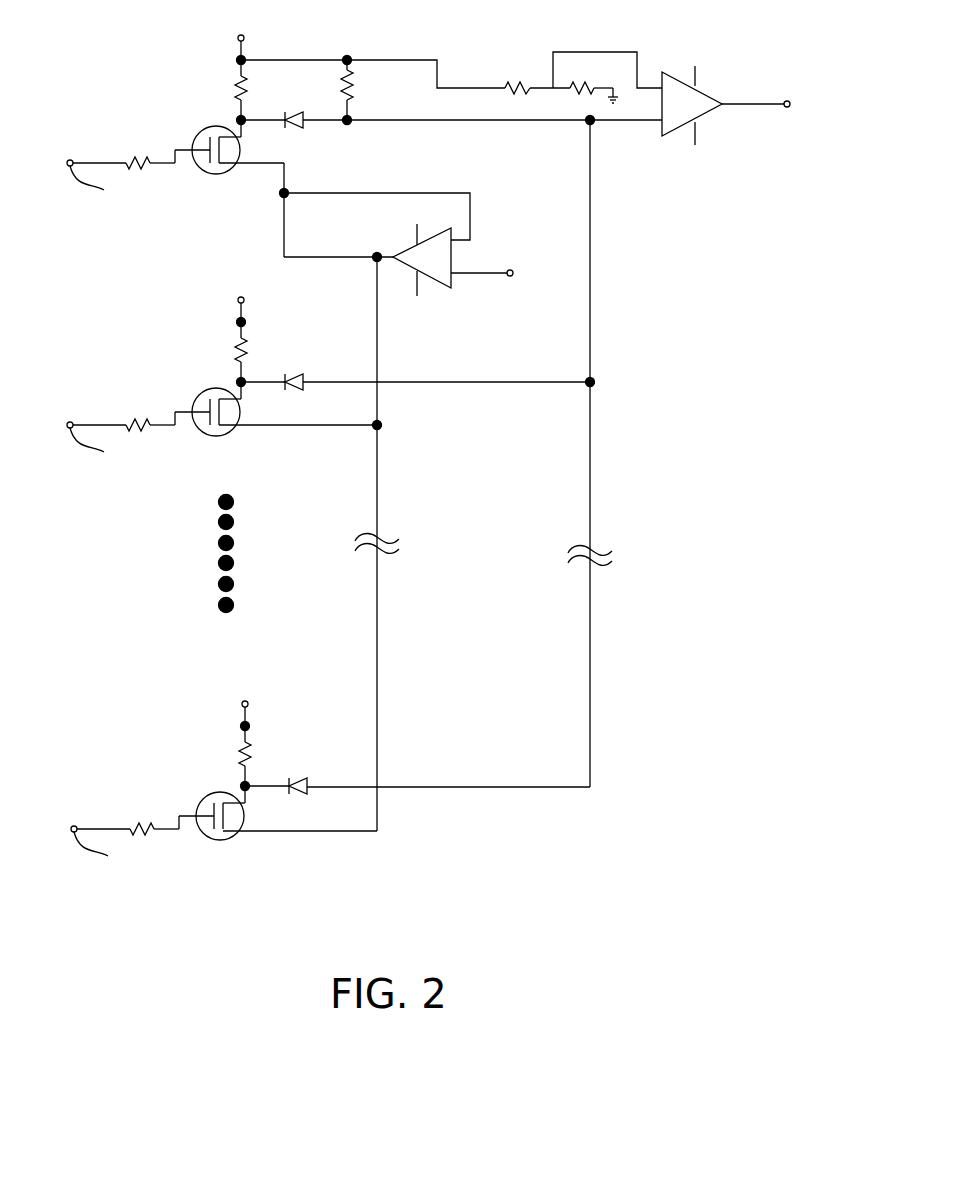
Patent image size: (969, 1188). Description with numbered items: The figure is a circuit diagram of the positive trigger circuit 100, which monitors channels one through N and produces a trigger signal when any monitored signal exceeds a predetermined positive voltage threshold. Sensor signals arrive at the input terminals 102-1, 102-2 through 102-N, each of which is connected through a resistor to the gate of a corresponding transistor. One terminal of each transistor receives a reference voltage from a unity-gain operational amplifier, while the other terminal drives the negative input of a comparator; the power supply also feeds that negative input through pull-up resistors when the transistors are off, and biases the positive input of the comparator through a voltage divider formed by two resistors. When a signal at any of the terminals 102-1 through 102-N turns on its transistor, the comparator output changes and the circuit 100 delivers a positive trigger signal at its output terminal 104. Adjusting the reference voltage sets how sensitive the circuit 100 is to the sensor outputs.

The positive trigger circuit 100 is at (421, 459).
The input terminal 102-1 is at (185, 132).
The input terminal 102-2 is at (185, 394).
The input terminal 102-N is at (189, 798).
The output terminal 104 is at (787, 107).